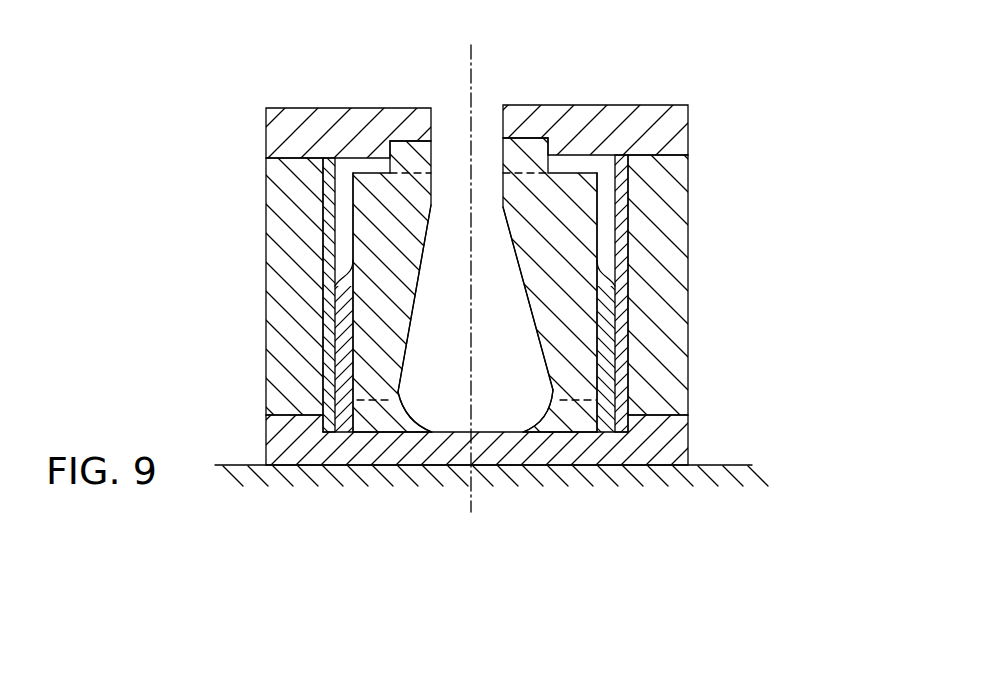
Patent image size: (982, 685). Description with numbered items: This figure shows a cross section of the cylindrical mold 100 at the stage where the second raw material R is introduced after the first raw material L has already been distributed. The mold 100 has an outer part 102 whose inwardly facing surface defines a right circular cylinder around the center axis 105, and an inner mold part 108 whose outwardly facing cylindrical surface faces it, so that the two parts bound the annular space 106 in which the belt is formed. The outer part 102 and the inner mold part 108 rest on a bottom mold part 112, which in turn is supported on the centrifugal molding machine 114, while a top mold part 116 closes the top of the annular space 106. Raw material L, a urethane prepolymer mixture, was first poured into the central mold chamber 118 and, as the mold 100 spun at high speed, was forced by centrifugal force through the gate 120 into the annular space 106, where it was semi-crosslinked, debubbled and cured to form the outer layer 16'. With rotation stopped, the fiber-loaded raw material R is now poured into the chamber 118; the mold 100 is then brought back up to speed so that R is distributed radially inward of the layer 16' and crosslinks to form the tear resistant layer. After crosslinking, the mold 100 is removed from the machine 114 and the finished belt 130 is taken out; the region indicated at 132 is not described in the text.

The cylindrical mold 100 is at (684, 55).
The outer mold part 102 is at (658, 257).
The center axis 105 is at (471, 80).
The annular space 106 is at (602, 203).
The inner mold part 108 is at (585, 245).
The bottom mold part 112 is at (653, 447).
The centrifugal molding machine 114 is at (548, 549).
The top mold part 116 is at (668, 122).
The central mold chamber 118 is at (448, 386).
The gate 120 is at (578, 405).
The belt 130 is at (318, 293).
The recess 132 is at (548, 152).
The outer layer 16' is at (572, 302).
The raw material for conveying layer L is at (618, 347).
The raw material for tear resistant layer R is at (348, 432).